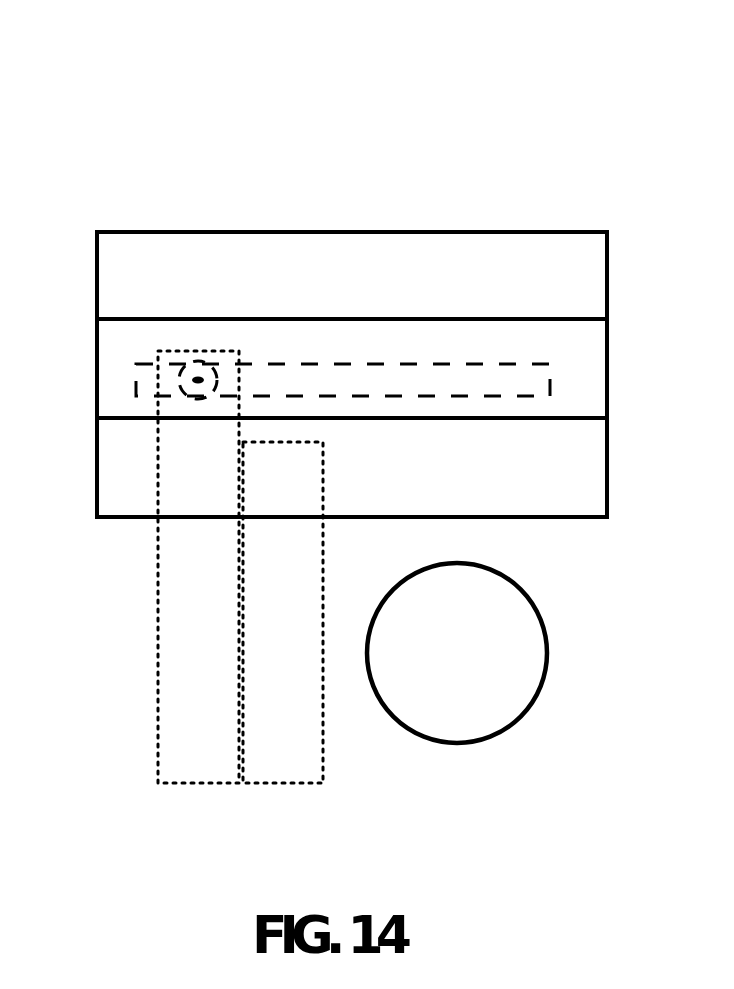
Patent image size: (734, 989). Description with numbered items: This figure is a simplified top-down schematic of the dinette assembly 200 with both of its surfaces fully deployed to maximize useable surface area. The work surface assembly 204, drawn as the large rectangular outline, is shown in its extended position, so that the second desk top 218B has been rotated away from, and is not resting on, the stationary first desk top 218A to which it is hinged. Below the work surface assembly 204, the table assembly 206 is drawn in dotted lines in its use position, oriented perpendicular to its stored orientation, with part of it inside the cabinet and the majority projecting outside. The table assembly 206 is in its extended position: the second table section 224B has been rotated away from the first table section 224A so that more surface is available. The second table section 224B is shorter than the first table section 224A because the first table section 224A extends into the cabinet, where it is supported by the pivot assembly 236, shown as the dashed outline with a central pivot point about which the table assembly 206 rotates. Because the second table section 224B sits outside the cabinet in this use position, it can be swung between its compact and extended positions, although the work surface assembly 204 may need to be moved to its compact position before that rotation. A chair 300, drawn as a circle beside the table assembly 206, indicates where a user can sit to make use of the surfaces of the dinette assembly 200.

The dinette assembly 200 is at (192, 80).
The work surface assembly 204 is at (415, 467).
The table assembly 206 is at (175, 621).
The first desk top 218A is at (608, 362).
The second desk top 218B is at (608, 478).
The first table section 224A is at (223, 790).
The second table section 224B is at (317, 790).
The pivot assembly 236 is at (198, 360).
The chair 300 is at (463, 745).